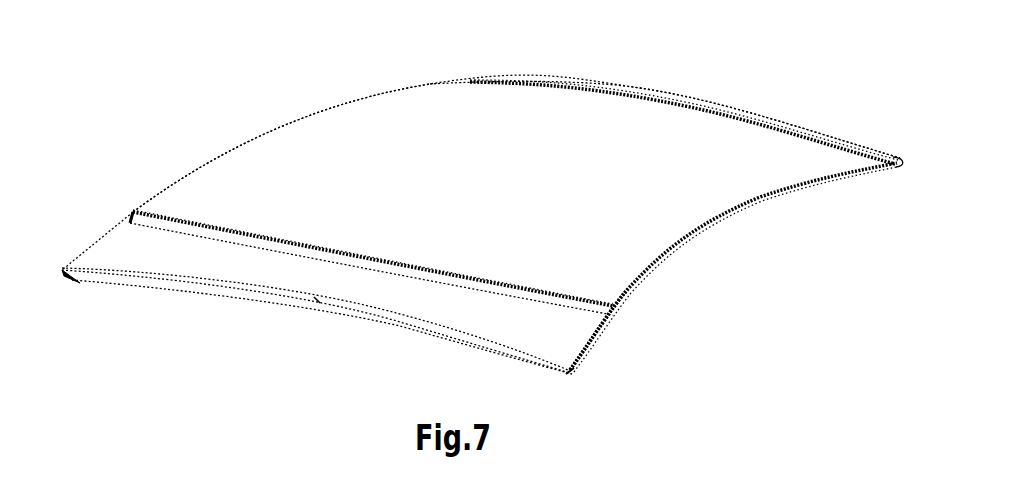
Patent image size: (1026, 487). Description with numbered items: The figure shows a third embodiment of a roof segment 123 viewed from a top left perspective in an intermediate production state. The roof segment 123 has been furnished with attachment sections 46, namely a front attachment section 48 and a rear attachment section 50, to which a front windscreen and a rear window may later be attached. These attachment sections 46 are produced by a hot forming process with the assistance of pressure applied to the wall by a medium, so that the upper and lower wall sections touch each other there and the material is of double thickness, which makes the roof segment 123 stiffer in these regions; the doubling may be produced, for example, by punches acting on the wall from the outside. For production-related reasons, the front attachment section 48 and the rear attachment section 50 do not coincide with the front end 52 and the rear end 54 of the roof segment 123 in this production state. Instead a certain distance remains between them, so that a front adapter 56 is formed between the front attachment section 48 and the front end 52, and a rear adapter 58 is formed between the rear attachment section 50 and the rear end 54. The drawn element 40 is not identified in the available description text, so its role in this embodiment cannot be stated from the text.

The roof panel 40 is at (317, 300).
The attachment sections 46 is at (613, 313).
The front attachment section 48 is at (613, 313).
The rear attachment section 50 is at (843, 152).
The front end 52 is at (218, 314).
The rear end 54 is at (678, 70).
The front adapter 56 is at (573, 345).
The rear adapter 58 is at (592, 87).
The roof segment 123 is at (137, 116).